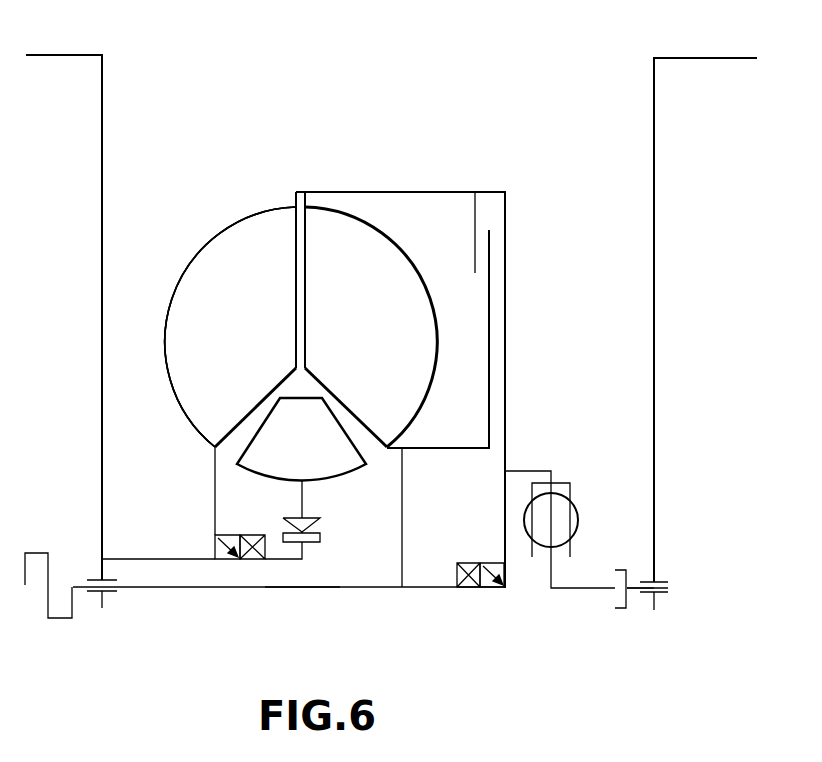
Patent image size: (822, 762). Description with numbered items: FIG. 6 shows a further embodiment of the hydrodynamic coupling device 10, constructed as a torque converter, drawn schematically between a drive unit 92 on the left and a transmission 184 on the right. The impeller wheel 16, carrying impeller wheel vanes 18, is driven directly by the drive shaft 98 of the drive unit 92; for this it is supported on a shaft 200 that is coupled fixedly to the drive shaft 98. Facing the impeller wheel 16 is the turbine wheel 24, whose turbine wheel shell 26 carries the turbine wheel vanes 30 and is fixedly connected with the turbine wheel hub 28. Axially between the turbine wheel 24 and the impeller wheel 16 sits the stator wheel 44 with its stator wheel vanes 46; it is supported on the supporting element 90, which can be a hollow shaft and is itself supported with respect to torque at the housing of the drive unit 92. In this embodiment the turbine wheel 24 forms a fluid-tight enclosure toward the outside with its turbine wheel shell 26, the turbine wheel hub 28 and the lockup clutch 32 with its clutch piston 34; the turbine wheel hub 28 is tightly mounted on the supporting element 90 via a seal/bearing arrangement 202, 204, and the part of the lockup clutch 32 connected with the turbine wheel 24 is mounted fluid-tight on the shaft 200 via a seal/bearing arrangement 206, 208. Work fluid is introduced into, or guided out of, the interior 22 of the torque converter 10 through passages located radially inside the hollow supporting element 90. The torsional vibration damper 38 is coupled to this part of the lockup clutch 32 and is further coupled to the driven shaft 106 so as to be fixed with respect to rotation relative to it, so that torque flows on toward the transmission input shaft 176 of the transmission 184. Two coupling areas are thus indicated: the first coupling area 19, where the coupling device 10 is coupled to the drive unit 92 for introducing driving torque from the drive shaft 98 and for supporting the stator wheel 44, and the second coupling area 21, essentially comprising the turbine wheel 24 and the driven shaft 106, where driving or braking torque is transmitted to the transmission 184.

The hydrodynamic coupling device 10 is at (352, 130).
The impeller wheel 16 is at (360, 208).
The impeller wheel vanes 18 is at (371, 327).
The first coupling area 19 is at (148, 605).
The second coupling area 21 is at (625, 617).
The interior 22 is at (288, 383).
The turbine wheel 24 is at (245, 207).
The turbine wheel shell 26 is at (198, 262).
The turbine wheel hub 28 is at (215, 503).
The turbine wheel vanes 30 is at (230, 327).
The lockup clutch 32 is at (508, 202).
The clutch piston 34 is at (490, 330).
The torsional vibration damper 38 is at (572, 480).
The stator wheel 44 is at (343, 490).
The stator wheel vanes 46 is at (301, 439).
The supporting element 90 is at (150, 559).
The drive unit 92 is at (57, 53).
The drive shaft 98 is at (60, 620).
The driven shaft 106 is at (570, 590).
The transmission input shaft 176 is at (633, 592).
The transmission 184 is at (723, 57).
The shaft 200 is at (292, 587).
The seal/bearing arrangement 202 is at (227, 560).
The seal/bearing arrangement 204 is at (247, 560).
The seal/bearing arrangement 206 is at (492, 588).
The seal/bearing arrangement 208 is at (470, 590).